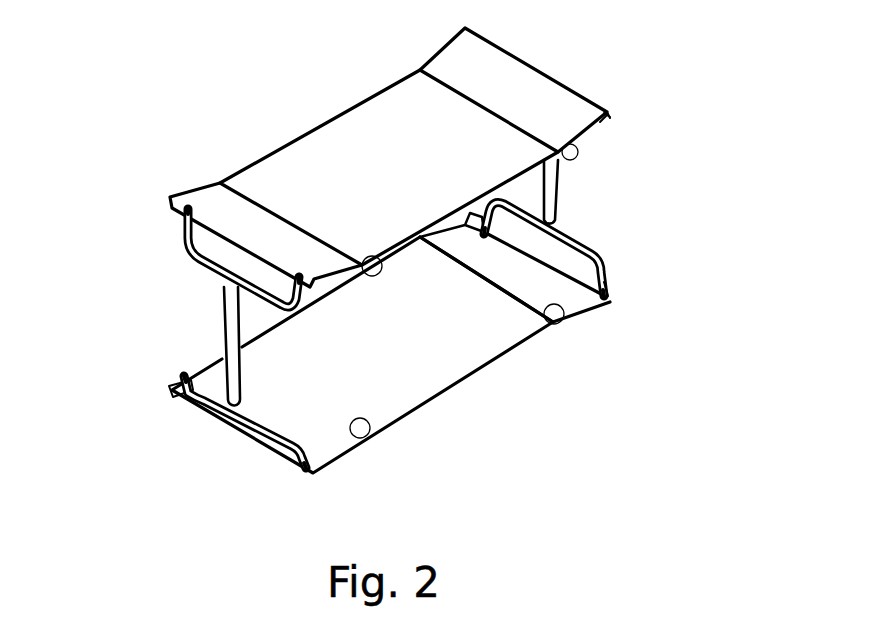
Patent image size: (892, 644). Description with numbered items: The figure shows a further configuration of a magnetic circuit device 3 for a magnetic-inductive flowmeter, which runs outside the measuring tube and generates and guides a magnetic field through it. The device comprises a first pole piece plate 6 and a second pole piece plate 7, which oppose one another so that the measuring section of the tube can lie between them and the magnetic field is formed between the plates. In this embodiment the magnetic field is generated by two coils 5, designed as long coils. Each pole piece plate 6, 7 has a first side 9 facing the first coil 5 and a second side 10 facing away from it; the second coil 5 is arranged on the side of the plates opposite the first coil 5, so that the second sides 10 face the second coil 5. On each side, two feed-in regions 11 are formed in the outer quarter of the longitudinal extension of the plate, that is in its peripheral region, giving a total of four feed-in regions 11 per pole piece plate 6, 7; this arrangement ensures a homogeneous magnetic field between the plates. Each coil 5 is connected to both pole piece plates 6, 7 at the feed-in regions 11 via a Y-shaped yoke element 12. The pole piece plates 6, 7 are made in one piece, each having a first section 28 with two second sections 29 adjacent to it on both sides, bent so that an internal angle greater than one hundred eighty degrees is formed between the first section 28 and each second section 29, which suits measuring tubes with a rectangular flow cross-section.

The magnetic circuit device 3 is at (135, 136).
The coil 5 is at (553, 205).
The first pole piece plate 6 is at (367, 138).
The second pole piece plate 7 is at (430, 382).
The first side 9 is at (190, 258).
The second side 10 is at (542, 70).
The feed-in region 11 is at (183, 214).
The Y-shaped yoke element 12 is at (600, 133).
The first section 28 is at (400, 398).
The second section 29 is at (330, 455).